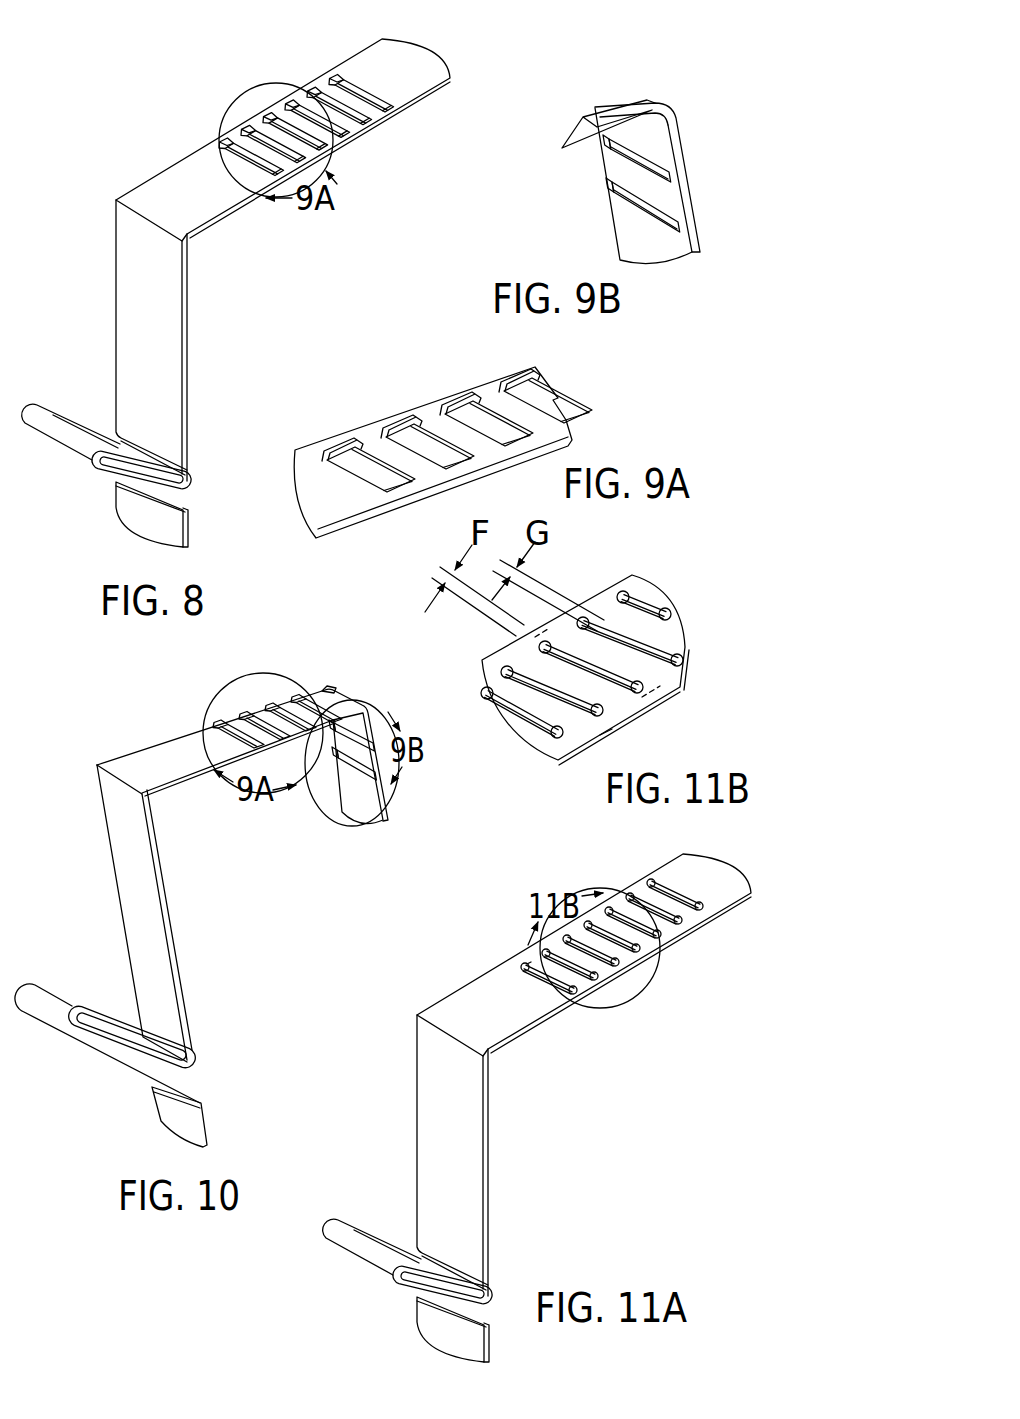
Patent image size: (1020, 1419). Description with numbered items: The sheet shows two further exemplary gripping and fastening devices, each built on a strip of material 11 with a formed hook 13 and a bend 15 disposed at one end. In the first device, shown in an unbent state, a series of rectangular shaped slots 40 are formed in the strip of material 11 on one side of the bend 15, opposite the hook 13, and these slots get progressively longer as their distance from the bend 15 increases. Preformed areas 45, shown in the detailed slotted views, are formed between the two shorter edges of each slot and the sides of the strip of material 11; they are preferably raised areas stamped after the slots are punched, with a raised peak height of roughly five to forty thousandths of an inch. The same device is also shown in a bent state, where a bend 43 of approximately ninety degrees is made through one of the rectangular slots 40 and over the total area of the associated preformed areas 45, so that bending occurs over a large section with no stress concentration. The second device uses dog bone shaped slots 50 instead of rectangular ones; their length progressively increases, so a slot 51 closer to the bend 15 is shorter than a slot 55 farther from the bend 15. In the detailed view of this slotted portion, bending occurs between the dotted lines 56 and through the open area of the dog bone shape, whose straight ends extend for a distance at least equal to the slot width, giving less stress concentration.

In FIG. 8, the strip of material 11 is at (150, 195).
In FIG. 9A, the strip of material 11 is at (323, 497).
In FIG. 11B, the strip of material 11 is at (537, 703).
In FIG. 10, the strip of material 11 is at (155, 773).
In FIG. 11A, the strip of material 11 is at (568, 955).
In FIG. 8, the formed hook 13 is at (42, 408).
In FIG. 10, the formed hook 13 is at (113, 777).
In FIG. 11A, the formed hook 13 is at (345, 1217).
In FIG. 8, the bend 15 is at (132, 203).
In FIG. 10, the bend 15 is at (38, 1008).
In FIG. 11A, the bend 15 is at (411, 1187).
In FIG. 8, the rectangular shaped slots 40 is at (337, 82).
In FIG. 9B, the rectangular shaped slots 40 is at (645, 148).
In FIG. 10, the rectangular shaped slots 40 is at (330, 692).
In FIG. 9B, the bend 43 is at (662, 100).
In FIG. 10, the bend 43 is at (324, 689).
In FIG. 8, the preformed areas 45 is at (372, 117).
In FIG. 9B, the preformed areas 45 is at (676, 170).
In FIG. 9A, the preformed areas 45 is at (446, 395).
In FIG. 10, the preformed areas 45 is at (259, 712).
In FIG. 11B, the dog bone shaped slots 50 is at (683, 663).
In FIG. 11A, the dog bone shaped slots 50 is at (617, 902).
In FIG. 11A, the slot 51 is at (530, 968).
In FIG. 11A, the slot 55 is at (665, 883).
In FIG. 11B, the dotted lines 56 is at (603, 733).